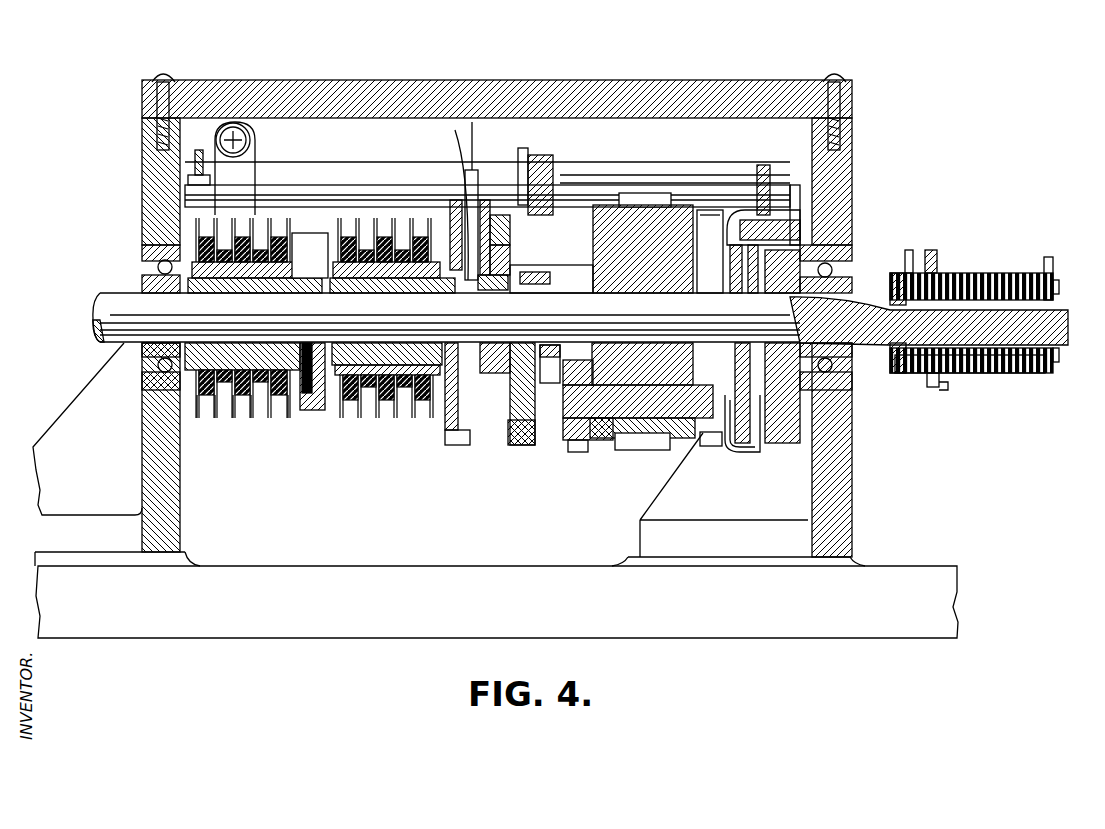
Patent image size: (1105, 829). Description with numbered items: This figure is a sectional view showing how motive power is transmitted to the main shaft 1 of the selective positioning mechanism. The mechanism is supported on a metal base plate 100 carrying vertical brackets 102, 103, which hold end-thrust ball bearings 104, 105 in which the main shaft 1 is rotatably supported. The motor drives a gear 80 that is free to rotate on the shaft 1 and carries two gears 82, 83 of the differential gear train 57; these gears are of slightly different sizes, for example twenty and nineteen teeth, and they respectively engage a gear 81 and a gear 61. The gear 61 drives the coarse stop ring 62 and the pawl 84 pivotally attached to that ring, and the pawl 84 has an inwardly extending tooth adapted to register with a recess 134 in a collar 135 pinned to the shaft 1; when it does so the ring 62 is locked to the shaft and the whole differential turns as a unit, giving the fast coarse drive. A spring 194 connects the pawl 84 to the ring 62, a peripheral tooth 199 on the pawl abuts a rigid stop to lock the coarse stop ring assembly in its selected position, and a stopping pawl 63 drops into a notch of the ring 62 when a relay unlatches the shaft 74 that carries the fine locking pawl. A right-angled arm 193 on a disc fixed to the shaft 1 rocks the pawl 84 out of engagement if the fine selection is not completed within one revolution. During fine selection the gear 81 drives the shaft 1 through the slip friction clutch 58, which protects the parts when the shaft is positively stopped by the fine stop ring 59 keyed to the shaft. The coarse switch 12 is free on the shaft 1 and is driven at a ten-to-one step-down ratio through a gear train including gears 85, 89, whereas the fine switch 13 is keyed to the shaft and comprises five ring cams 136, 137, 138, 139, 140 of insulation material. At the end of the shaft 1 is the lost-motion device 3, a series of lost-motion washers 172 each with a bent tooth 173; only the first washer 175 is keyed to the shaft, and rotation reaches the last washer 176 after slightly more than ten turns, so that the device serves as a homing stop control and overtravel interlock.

The main shaft 1 is at (92, 300).
The lost-motion device 3 is at (1012, 370).
The coarse switch 12 is at (377, 425).
The fine switch 13 is at (229, 425).
The differential gear train 57 is at (625, 450).
The slip friction clutch 58 is at (730, 450).
The fine stop ring 59 is at (835, 208).
The gear 61 is at (573, 288).
The coarse stop ring 62 is at (510, 445).
The pawl 63 is at (530, 152).
The shaft 74 is at (665, 175).
The gear 80 is at (600, 232).
The gear 81 is at (705, 290).
The gear 82 is at (700, 432).
The gear 83 is at (578, 452).
The pawl 84 is at (492, 210).
The gear 85 is at (547, 383).
The gear 89 is at (456, 446).
The metal base plate 100 is at (845, 636).
The bracket 102 is at (850, 484).
The bracket 103 is at (178, 498).
The end-thrust ball bearing 104 is at (840, 268).
The end-thrust ball bearing 105 is at (138, 316).
The recess 134 is at (498, 275).
The collar 135 is at (490, 374).
The ring cam 136 is at (285, 400).
The ring cam 137 is at (262, 400).
The ring cam 138 is at (242, 420).
The ring cam 139 is at (222, 420).
The ring cam 140 is at (198, 420).
The lost-motion washer 172 is at (990, 275).
The tooth 173 is at (1052, 262).
The first washer 175 is at (1059, 283).
The last washer 176 is at (936, 389).
The right-angled arm 193 is at (483, 200).
The spring 194 is at (498, 248).
The peripheral tooth 199 is at (455, 130).